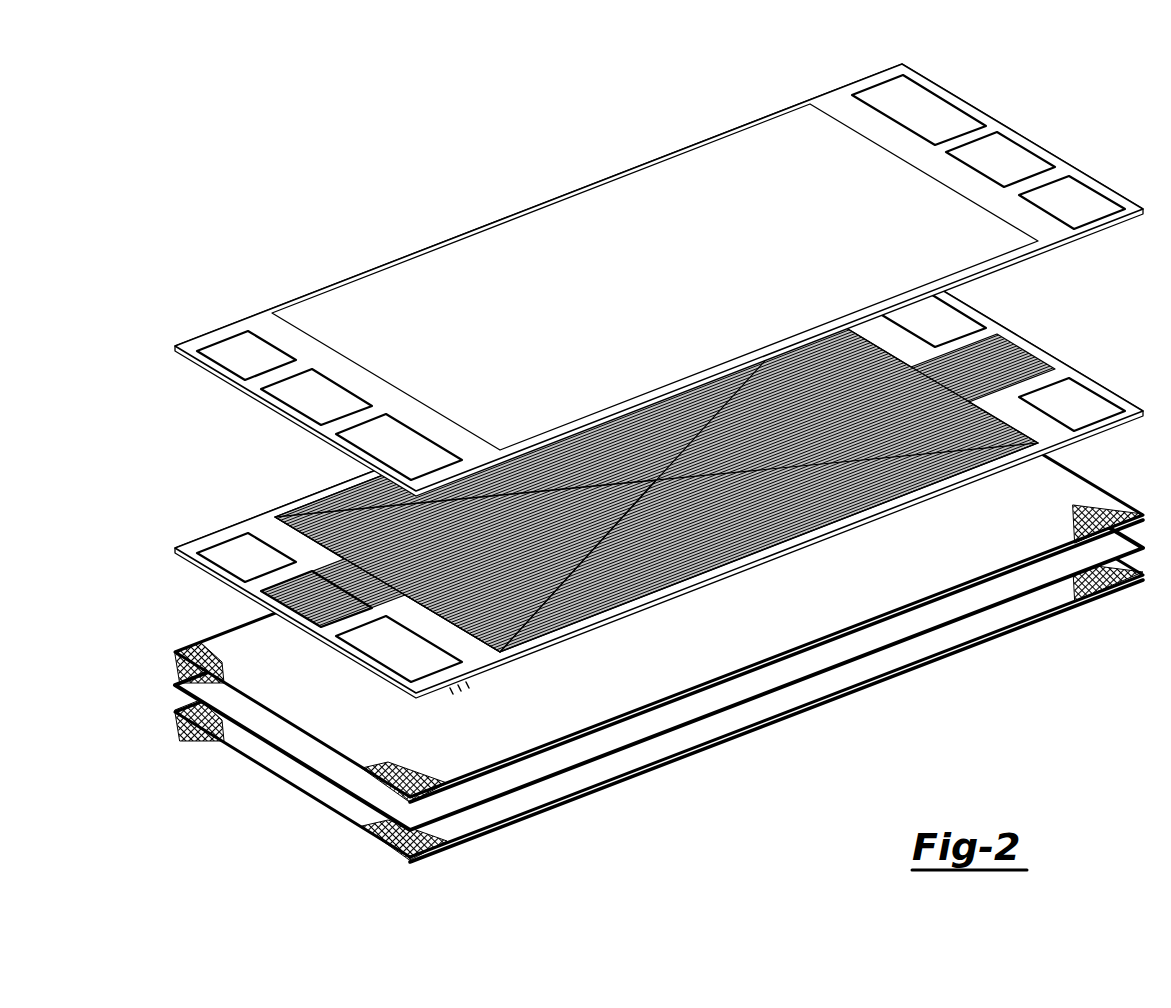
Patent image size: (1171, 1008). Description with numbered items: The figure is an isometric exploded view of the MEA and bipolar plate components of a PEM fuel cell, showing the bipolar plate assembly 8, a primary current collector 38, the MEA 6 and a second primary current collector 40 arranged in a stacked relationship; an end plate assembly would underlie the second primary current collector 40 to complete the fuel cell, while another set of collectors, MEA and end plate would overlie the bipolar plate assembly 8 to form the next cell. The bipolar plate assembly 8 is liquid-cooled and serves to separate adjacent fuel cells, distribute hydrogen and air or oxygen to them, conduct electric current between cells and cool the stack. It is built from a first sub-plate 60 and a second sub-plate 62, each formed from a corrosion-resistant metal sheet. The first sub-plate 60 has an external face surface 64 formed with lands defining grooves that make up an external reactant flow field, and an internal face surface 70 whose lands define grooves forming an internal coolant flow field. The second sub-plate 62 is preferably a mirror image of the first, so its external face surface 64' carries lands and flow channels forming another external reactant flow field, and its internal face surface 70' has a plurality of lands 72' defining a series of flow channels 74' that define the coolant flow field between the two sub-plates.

The bipolar plate assembly 8 is at (1035, 322).
The MEA 6 is at (1040, 580).
The primary current collector 38 is at (1075, 478).
The primary current collector 40 is at (985, 627).
The second sub-plate 62 is at (1073, 366).
The external face surface 64 is at (659, 280).
The external face surface 64' is at (346, 619).
The first sub-plate 60 is at (993, 129).
The internal face surface 70 is at (316, 397).
The internal face surface 70' is at (658, 480).
The lands 72' is at (656, 480).
The flow channels 74' is at (465, 601).